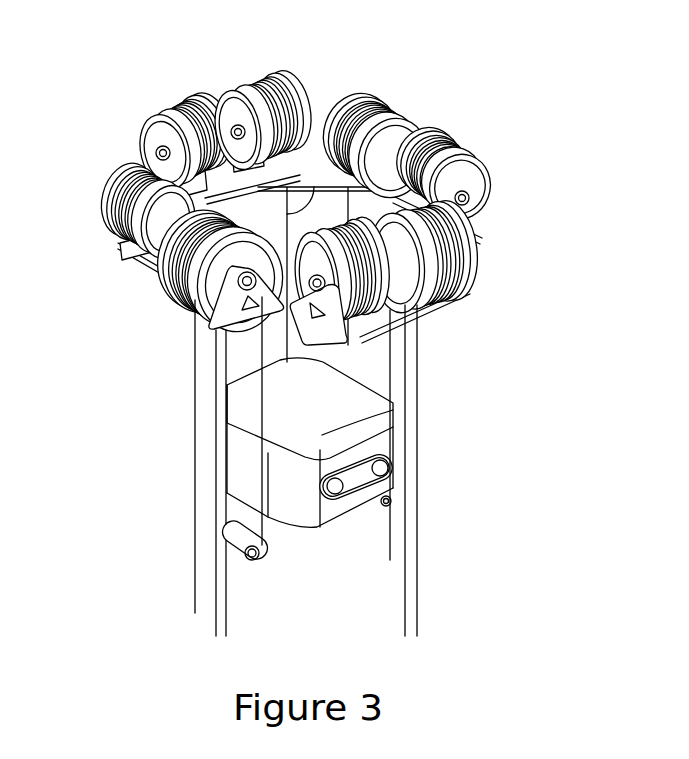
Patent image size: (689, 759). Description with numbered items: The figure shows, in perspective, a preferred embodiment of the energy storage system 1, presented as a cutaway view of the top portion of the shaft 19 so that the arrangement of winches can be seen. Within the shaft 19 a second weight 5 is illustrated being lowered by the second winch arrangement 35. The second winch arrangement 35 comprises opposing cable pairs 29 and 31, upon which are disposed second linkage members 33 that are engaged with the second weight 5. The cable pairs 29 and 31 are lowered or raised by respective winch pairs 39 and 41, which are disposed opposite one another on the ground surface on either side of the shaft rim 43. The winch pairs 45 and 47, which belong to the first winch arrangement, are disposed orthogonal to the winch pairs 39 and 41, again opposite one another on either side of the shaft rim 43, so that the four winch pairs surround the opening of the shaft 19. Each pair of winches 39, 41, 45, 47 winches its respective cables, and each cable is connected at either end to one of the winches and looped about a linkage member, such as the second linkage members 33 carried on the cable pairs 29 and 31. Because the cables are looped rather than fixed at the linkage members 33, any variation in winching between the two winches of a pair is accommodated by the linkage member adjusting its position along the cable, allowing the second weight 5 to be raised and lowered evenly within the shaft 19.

The energy storage system 1 is at (515, 421).
The second weight 5 is at (330, 510).
The shaft 19 is at (203, 526).
The cable pair 29 is at (385, 412).
The cable pair 31 is at (320, 187).
The second linkage members 33 is at (393, 502).
The second winch arrangement 35 is at (143, 93).
The winch pair 39 is at (262, 66).
The winch pair 41 is at (375, 325).
The shaft rim 43 is at (310, 202).
The winch pair 45 is at (118, 210).
The winch pair 47 is at (485, 152).